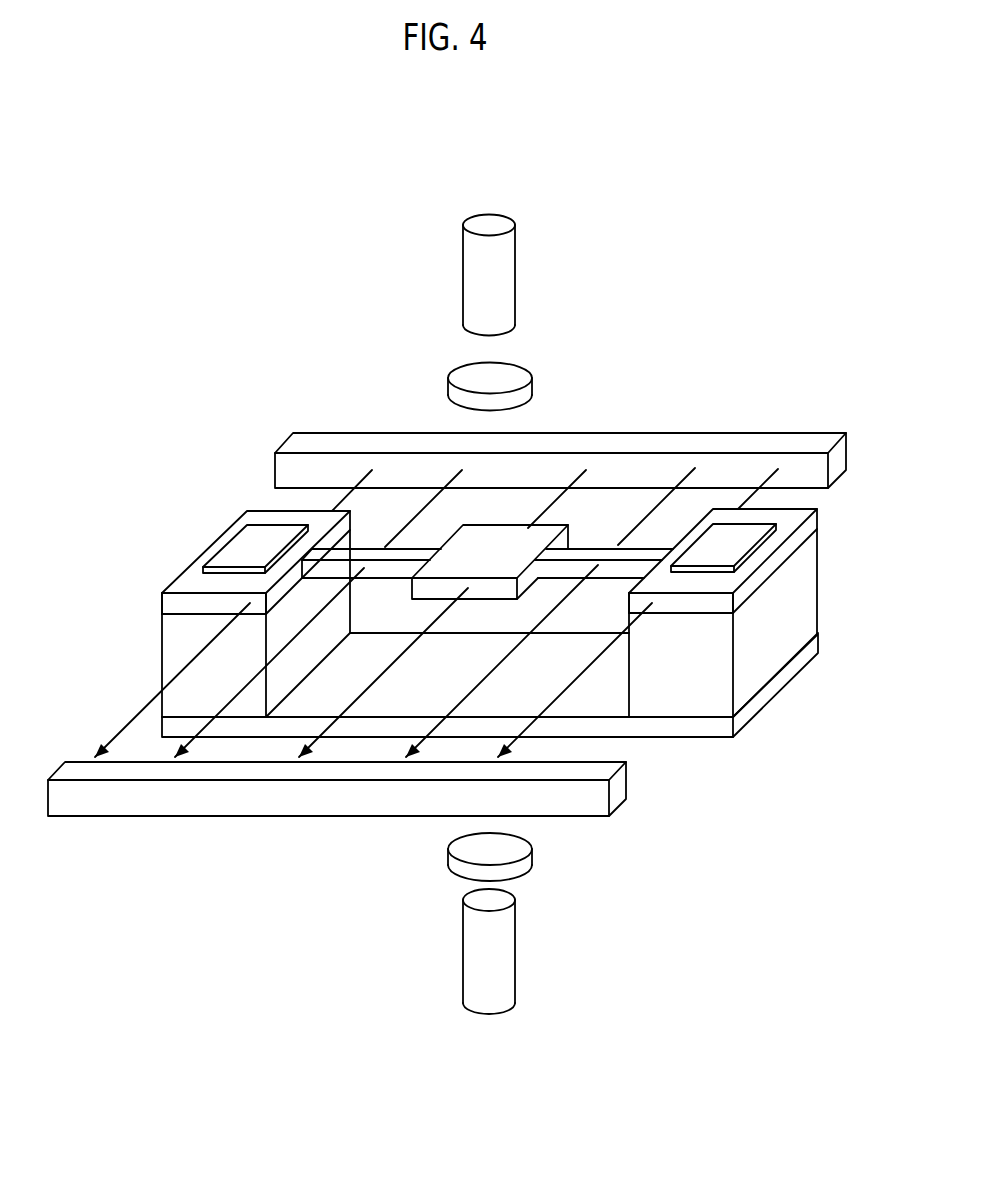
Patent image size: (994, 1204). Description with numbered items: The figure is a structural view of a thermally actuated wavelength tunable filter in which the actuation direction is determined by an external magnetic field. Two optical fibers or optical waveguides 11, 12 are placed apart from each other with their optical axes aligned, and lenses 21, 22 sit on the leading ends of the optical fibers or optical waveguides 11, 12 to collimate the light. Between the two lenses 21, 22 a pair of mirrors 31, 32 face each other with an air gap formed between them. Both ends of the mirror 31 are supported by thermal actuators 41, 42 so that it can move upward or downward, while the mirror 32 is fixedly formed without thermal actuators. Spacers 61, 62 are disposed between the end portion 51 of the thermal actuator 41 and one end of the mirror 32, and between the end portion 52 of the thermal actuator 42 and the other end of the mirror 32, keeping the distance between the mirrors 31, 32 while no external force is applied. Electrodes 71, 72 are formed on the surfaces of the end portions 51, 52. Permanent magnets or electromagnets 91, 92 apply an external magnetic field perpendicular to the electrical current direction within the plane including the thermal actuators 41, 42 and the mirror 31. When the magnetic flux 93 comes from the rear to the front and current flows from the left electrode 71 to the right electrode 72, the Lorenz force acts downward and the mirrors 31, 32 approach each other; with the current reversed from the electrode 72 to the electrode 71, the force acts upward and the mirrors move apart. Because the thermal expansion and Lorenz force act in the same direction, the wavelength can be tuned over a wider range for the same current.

The optical fiber or optical waveguide 11 is at (507, 292).
The optical fiber or optical waveguide 12 is at (508, 947).
The lens 21 is at (514, 378).
The lens 22 is at (532, 853).
The mirror 31 is at (508, 532).
The mirror 32 is at (393, 712).
The thermal actuator 41 is at (393, 550).
The thermal actuator 42 is at (577, 552).
The end portion of the thermal actuator 51 is at (258, 517).
The end portion of the thermal actuator 52 is at (792, 520).
The spacer 61 is at (168, 652).
The spacer 62 is at (802, 603).
The electrode 71 is at (230, 555).
The electrode 72 is at (745, 542).
The permanent magnet or electromagnet 91 is at (308, 442).
The permanent magnet or electromagnet 92 is at (269, 805).
The magnetic flux 93 is at (157, 697).